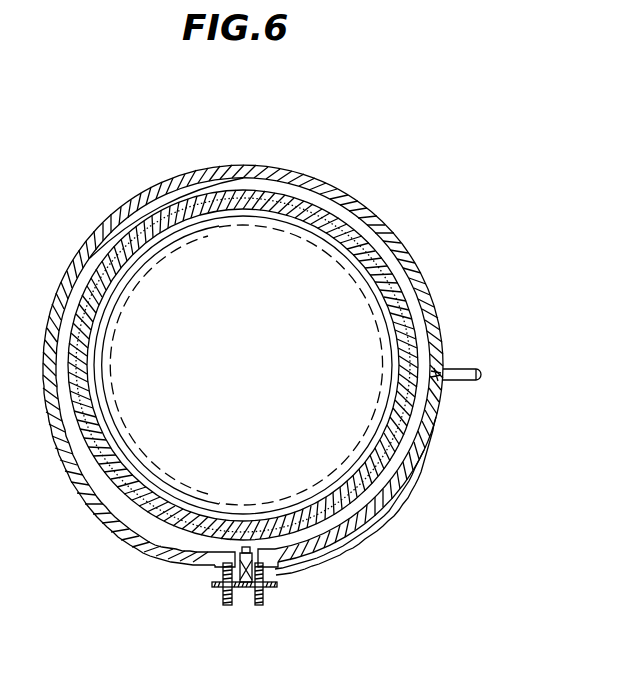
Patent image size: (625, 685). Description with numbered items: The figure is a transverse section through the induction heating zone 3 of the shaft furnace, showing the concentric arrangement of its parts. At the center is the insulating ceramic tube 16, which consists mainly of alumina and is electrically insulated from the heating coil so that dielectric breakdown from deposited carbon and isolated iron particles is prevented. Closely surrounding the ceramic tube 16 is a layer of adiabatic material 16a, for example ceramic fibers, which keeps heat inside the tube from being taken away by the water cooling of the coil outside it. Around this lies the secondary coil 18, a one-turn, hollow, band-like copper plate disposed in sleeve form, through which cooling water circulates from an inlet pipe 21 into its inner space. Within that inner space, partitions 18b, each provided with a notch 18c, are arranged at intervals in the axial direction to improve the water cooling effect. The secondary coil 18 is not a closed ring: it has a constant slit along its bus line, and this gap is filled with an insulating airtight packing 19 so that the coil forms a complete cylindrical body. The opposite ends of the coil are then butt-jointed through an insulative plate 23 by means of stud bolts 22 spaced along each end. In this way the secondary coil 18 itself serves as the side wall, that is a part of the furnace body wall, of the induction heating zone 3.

The induction heating zone 3 is at (405, 196).
The insulating ceramic tube 16 is at (186, 212).
The adiabatic material 16a is at (375, 257).
The secondary coil 18 is at (276, 187).
The partitions 18b is at (92, 266).
The notch 18c is at (290, 560).
The insulating packing 19 is at (245, 588).
The inlet pipe 21 is at (463, 368).
The stud bolts 22 is at (218, 590).
The insulative plate 23 is at (276, 592).